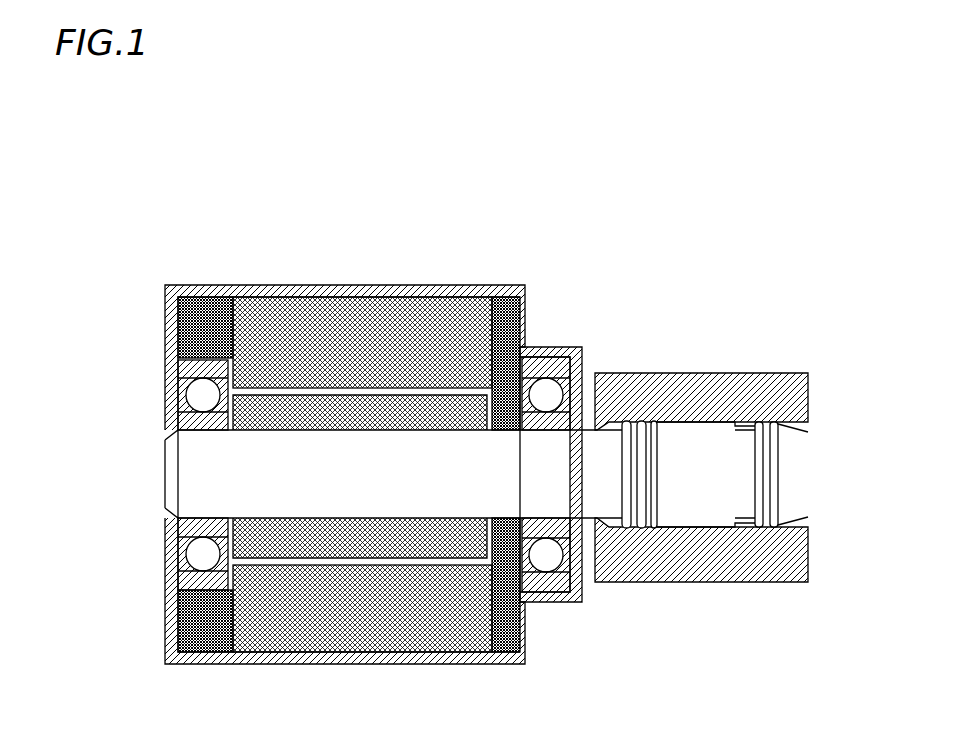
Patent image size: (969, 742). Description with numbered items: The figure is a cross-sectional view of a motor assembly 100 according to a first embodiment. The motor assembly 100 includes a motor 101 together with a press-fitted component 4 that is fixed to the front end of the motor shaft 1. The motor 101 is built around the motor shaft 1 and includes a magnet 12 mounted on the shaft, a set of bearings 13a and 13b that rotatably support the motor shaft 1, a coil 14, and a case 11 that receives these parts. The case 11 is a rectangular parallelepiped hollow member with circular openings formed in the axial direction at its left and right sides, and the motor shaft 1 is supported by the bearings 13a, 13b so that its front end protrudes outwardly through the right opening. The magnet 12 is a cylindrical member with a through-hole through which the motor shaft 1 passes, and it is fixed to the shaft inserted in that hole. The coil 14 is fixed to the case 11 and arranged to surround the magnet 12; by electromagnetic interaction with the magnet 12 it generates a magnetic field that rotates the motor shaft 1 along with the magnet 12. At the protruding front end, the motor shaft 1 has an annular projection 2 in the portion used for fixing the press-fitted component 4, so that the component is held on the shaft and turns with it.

The motor assembly 100 is at (708, 152).
The motor 101 is at (527, 258).
The case 11 is at (405, 285).
The magnet 12 is at (306, 413).
The coil 14 is at (348, 318).
The bearing 13a is at (160, 355).
The bearing 13b is at (573, 347).
The motor shaft 1 is at (180, 468).
The press-fitted component 4 is at (715, 372).
The annular projection 2 is at (790, 447).